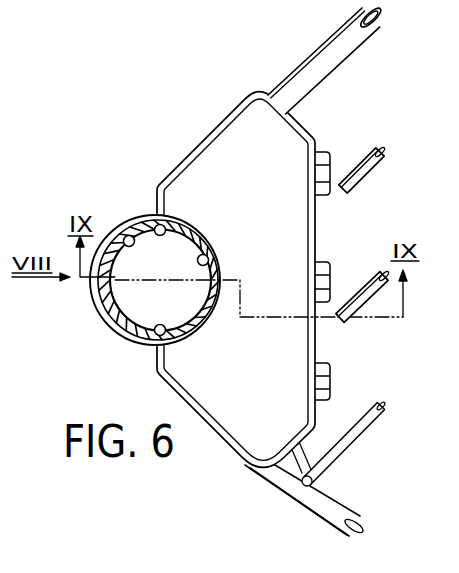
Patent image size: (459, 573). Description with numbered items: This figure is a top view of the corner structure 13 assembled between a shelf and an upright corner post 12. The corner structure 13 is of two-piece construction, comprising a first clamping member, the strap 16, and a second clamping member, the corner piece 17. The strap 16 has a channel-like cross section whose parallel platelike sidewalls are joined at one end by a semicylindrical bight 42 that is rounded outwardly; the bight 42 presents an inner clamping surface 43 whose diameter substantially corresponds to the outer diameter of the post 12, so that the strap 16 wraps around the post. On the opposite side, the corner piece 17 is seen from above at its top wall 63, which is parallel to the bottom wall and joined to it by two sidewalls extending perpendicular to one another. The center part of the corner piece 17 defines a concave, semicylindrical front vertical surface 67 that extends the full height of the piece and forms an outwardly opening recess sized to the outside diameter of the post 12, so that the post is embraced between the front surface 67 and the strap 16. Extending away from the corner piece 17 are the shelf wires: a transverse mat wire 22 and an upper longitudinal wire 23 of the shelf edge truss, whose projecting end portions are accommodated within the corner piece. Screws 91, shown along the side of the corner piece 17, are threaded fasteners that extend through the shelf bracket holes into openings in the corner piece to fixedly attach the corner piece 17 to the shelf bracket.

The corner post 12 is at (117, 323).
The corner structure 13 is at (160, 169).
The strap 16 is at (97, 311).
The corner piece 17 is at (204, 141).
The mat wire 22 is at (363, 424).
The upper longitudinal wire 23 is at (335, 499).
The bight 42 is at (130, 338).
The inner clamping surface 43 is at (133, 230).
The top wall 63 is at (259, 176).
The front vertical surface 67 is at (203, 248).
The screw 91 is at (330, 172).